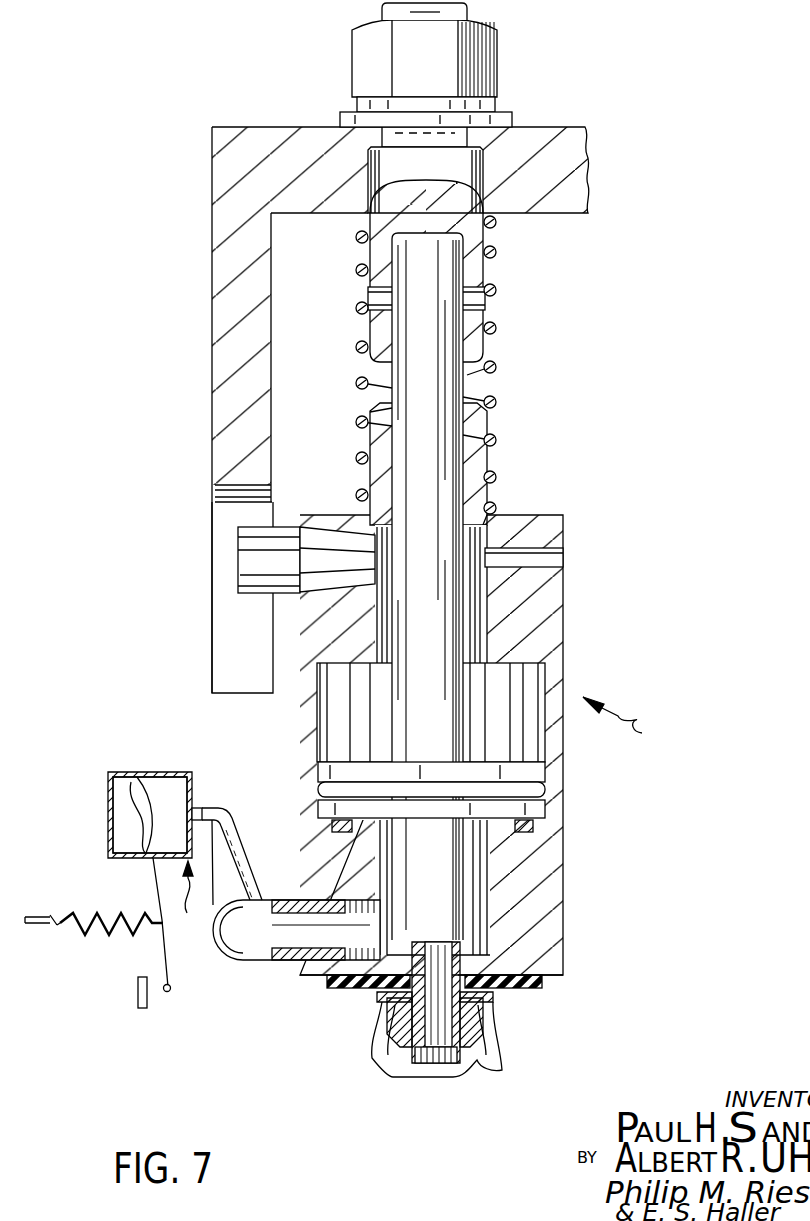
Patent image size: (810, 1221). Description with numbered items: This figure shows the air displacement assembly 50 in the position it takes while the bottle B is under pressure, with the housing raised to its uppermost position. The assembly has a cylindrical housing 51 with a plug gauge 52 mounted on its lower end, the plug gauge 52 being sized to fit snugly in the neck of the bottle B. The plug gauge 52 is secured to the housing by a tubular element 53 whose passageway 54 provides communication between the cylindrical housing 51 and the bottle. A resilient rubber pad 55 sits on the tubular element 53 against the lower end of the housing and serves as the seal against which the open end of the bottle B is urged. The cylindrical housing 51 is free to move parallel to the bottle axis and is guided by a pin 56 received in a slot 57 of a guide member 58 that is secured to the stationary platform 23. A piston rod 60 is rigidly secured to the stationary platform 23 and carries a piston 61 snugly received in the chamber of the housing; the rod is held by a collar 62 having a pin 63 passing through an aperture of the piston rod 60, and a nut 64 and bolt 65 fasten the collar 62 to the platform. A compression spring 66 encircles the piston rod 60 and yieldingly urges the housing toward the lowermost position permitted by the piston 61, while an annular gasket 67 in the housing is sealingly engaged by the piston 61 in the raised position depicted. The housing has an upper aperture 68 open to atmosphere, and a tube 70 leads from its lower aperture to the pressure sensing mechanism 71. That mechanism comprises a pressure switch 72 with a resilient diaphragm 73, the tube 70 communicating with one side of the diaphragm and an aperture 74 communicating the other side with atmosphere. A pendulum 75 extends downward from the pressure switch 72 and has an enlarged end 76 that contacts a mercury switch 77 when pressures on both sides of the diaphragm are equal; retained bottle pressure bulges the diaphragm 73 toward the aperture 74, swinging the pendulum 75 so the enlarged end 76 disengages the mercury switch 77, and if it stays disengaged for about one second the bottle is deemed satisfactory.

The stationary platform 23 is at (568, 142).
The air displacement assembly 50 is at (641, 734).
The cylindrical housing 51 is at (540, 893).
The plug gauge 52 is at (463, 1073).
The tubular element 53 is at (397, 1067).
The passageway 54 is at (433, 1072).
The resilient rubber pad 55 is at (543, 983).
The pin 56 is at (260, 563).
The slot 57 is at (237, 632).
The guide member 58 is at (232, 335).
The piston rod 60 is at (428, 478).
The piston 61 is at (493, 770).
The collar 62 is at (467, 247).
The pin 63 is at (483, 302).
The nut 64 is at (473, 72).
The bolt 65 is at (467, 13).
The compression spring 66 is at (360, 385).
The annular gasket 67 is at (330, 825).
The upper aperture 68 is at (560, 562).
The tube 70 is at (240, 938).
The pressure sensing mechanism 71 is at (183, 886).
The pressure switch 72 is at (108, 782).
The resilient diaphragm 73 is at (137, 775).
The aperture 74 is at (108, 815).
The pendulum 75 is at (172, 955).
The enlarged end 76 is at (167, 990).
The mercury switch 77 is at (122, 1000).
The bottle B is at (497, 1053).